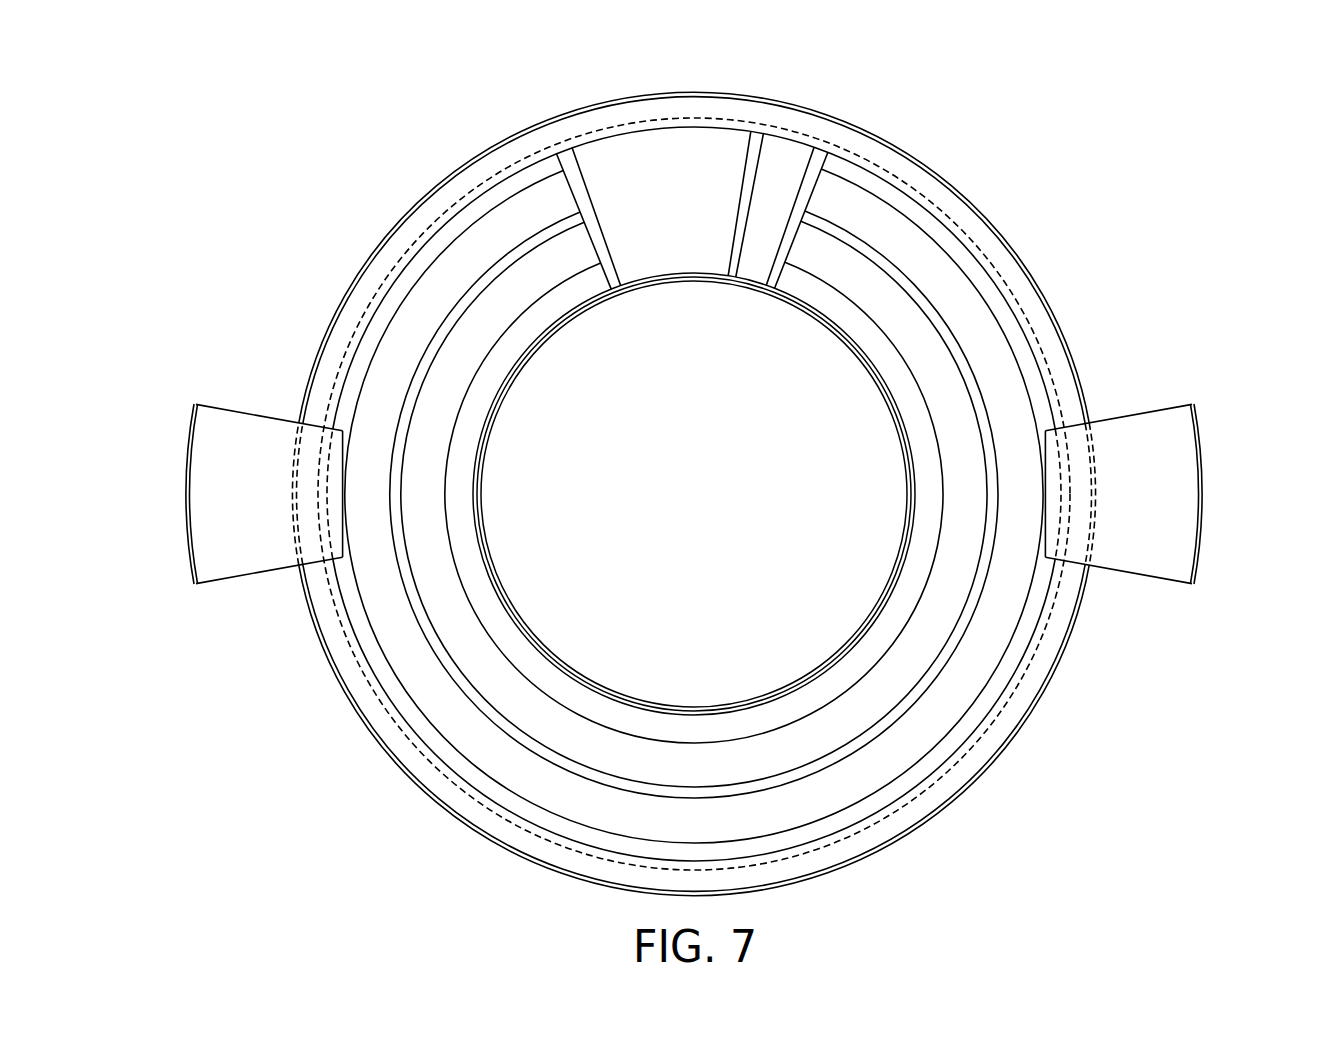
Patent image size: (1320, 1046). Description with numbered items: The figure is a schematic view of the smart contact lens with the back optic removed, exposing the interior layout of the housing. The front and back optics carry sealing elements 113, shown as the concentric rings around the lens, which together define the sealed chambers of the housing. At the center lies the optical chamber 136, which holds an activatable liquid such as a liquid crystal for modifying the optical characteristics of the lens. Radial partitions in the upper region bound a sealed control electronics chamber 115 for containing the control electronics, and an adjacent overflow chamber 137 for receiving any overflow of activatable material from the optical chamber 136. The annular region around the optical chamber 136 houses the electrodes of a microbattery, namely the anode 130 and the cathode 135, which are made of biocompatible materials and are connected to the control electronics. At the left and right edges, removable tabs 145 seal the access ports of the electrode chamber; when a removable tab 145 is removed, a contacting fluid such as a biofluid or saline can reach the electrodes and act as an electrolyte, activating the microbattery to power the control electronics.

The sealing elements 113 is at (485, 156).
The sealed control electronics chamber 115 is at (660, 210).
The anode 130 is at (921, 234).
The cathode 135 is at (924, 320).
The optical chamber 136 is at (694, 494).
The overflow chamber 137 is at (792, 217).
The removable tab 145 is at (176, 449).